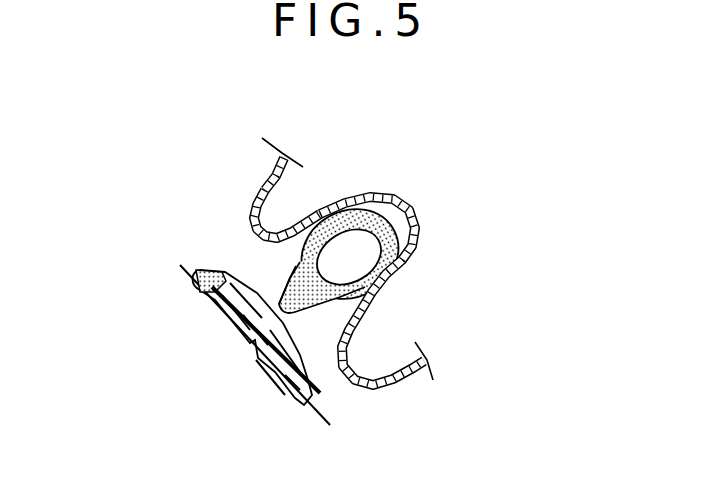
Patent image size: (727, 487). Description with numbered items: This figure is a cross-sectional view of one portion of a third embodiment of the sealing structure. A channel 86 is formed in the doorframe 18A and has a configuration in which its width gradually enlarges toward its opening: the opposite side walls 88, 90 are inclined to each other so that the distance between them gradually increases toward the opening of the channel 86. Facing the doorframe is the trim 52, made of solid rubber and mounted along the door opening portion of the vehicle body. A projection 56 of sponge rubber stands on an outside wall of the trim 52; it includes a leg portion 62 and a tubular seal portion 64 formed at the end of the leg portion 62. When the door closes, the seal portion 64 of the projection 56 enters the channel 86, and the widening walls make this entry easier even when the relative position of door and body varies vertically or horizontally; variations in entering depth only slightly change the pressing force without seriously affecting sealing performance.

The doorframe 18A is at (258, 192).
The trim 52 is at (333, 405).
The projection 56 is at (277, 269).
The leg portion 62 is at (288, 318).
The seal portion 64 is at (382, 283).
The channel 86 is at (435, 208).
The side wall 88 is at (347, 203).
The side wall 90 is at (310, 308).